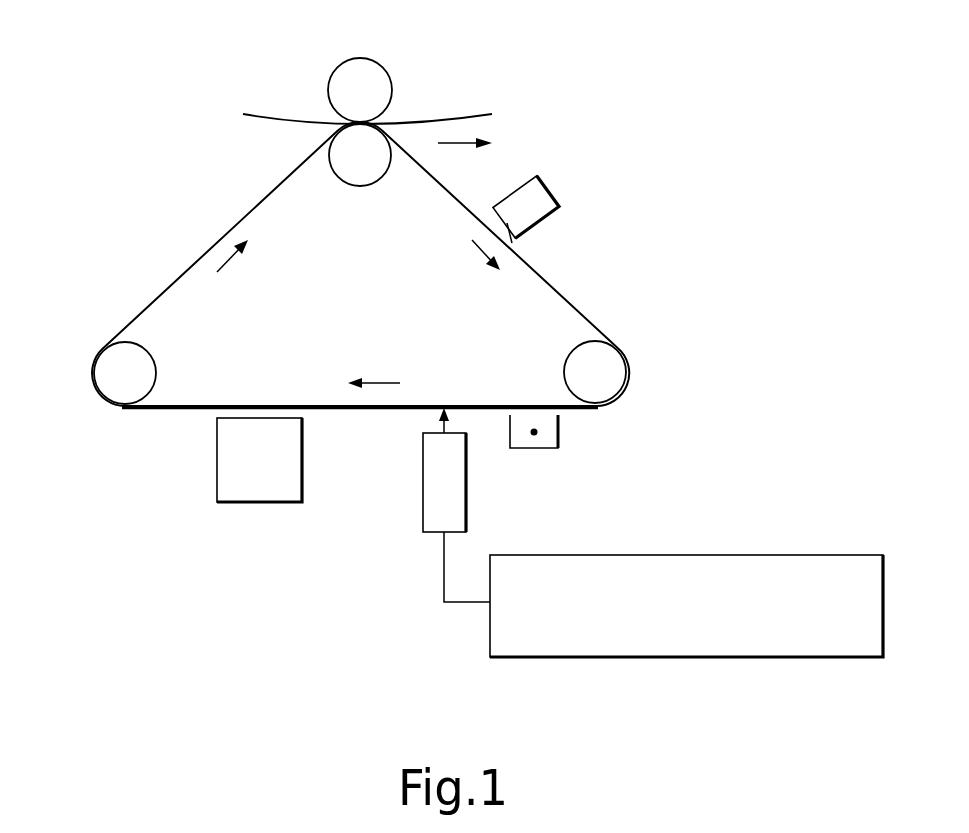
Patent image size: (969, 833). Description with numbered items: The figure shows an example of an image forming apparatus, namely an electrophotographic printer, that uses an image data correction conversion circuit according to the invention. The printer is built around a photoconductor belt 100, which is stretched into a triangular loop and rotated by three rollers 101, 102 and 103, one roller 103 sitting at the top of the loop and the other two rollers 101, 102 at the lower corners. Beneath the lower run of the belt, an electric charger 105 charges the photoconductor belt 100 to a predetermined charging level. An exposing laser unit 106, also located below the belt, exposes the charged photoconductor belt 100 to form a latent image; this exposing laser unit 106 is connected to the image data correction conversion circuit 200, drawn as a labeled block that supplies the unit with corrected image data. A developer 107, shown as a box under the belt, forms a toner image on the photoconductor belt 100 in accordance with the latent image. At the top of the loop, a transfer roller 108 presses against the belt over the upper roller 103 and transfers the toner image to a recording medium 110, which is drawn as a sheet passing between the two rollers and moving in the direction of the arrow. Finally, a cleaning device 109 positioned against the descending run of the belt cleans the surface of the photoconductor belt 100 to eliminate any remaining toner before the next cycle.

The photoconductor belt 100 is at (542, 273).
The roller 101 is at (610, 362).
The roller 102 is at (117, 390).
The roller 103 is at (362, 177).
The electric charger 105 is at (556, 448).
The exposing laser unit 106 is at (468, 505).
The developer 107 is at (260, 502).
The transfer roller 108 is at (368, 80).
The cleaning device 109 is at (552, 192).
The recording medium 110 is at (475, 115).
The image data correction conversion circuit 200 is at (770, 555).